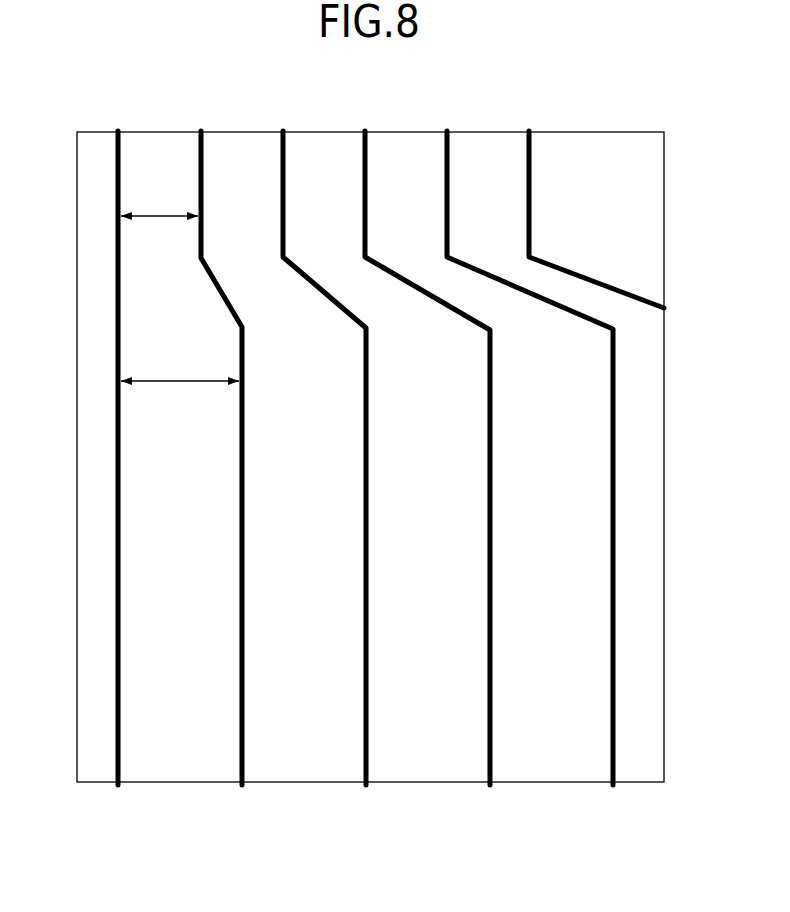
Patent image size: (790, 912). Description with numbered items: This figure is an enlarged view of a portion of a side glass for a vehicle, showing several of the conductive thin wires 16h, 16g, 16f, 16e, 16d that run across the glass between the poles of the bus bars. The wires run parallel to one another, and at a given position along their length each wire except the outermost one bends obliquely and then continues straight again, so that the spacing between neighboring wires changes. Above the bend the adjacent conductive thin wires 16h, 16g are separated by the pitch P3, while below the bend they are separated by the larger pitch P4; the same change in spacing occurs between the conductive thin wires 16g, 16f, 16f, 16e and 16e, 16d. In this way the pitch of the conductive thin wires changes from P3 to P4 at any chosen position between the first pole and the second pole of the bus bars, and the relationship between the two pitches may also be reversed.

The conductive thin wire 16h is at (120, 732).
The conductive thin wire 16g is at (244, 732).
The conductive thin wire 16f is at (368, 732).
The conductive thin wire 16e is at (492, 732).
The conductive thin wire 16d is at (615, 732).
The pitch P3 is at (159, 202).
The pitch P4 is at (180, 367).